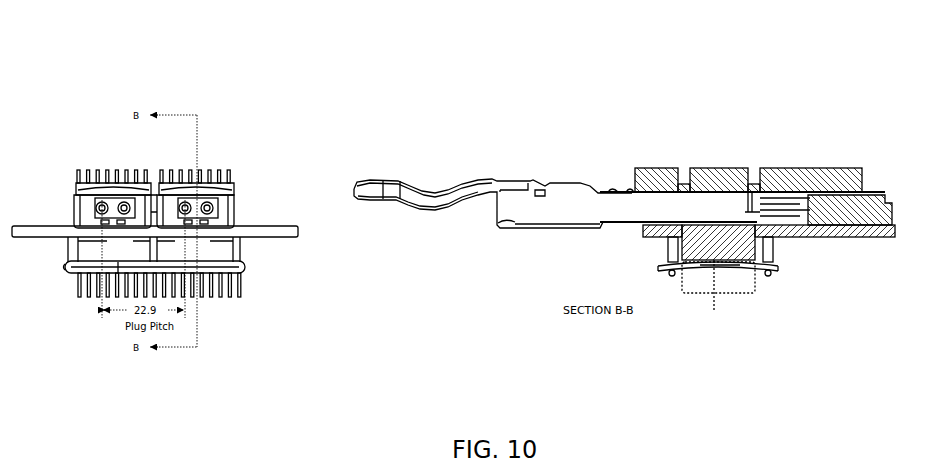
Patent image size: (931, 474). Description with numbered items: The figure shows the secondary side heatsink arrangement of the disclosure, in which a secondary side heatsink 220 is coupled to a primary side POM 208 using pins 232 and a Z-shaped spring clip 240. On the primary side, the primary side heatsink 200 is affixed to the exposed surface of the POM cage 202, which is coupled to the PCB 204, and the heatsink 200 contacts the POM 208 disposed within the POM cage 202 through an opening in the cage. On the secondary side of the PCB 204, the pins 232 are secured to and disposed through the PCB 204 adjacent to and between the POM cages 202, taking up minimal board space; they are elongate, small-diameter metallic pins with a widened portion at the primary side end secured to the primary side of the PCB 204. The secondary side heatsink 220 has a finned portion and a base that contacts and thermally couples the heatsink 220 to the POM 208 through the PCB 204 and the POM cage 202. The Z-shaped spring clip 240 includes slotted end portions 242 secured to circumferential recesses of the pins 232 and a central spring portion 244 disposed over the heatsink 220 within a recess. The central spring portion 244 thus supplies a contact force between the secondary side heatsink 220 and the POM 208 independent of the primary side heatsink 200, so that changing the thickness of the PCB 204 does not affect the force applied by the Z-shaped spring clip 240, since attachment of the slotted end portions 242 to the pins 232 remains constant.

The primary side heatsink 200 is at (233, 158).
The POM cage 202 is at (154, 206).
The PCB 204 is at (290, 250).
The POM 208 is at (137, 163).
The secondary side heatsink 220 is at (226, 305).
The pins 232 is at (249, 256).
The Z-shaped spring clip 240 is at (210, 278).
The slotted end portions 242 is at (76, 285).
The central spring portion 244 is at (121, 280).